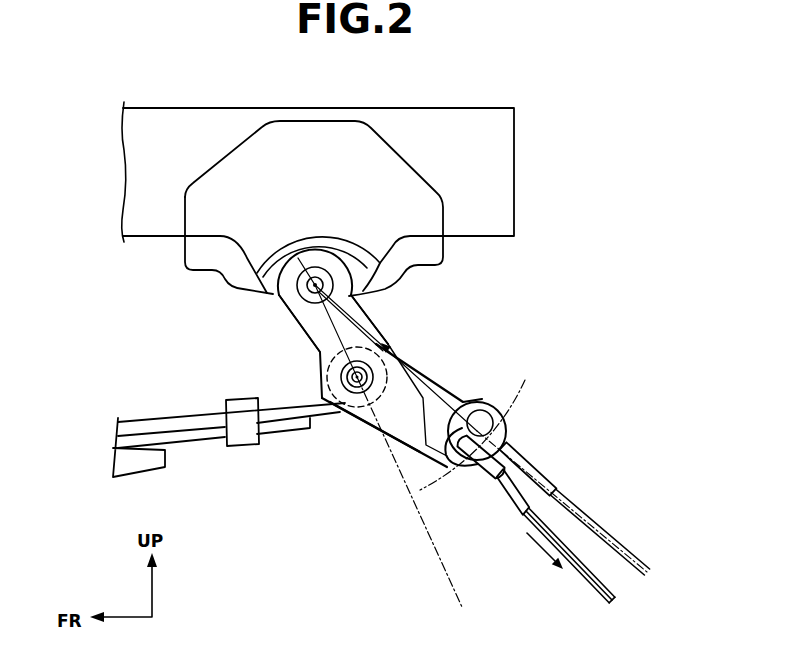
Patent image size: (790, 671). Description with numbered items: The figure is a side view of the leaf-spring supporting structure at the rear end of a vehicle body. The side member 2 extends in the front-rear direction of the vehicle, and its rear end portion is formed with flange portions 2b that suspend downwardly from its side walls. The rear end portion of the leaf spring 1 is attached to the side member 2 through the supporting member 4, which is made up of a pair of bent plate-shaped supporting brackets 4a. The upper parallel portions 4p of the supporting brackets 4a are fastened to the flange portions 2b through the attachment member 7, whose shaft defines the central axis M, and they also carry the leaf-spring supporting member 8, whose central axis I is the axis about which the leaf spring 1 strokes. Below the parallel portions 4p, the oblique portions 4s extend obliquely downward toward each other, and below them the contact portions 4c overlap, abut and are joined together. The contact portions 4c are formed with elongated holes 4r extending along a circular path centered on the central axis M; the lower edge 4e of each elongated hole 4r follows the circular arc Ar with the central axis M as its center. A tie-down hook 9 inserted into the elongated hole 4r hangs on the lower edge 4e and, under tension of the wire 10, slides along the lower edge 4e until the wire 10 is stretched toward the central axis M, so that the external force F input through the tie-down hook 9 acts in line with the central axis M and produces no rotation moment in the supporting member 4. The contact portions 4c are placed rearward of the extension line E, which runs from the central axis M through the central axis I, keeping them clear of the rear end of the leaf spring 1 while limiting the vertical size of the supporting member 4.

The leaf spring 1 is at (150, 414).
The side member 2 is at (448, 104).
The flange portions 2b is at (220, 212).
The supporting member 4 is at (425, 472).
The parallel portions 4p is at (357, 303).
The supporting brackets 4a is at (299, 323).
The oblique portions 4s is at (400, 433).
The elongated holes 4r is at (478, 408).
The contact portions 4c is at (490, 410).
The lower edge 4e is at (442, 458).
The attachment member 7 is at (275, 305).
The leaf-spring supporting member 8 is at (387, 345).
The tie-down hook 9 is at (525, 512).
The wire 10 is at (585, 578).
The central axis M is at (317, 283).
The central axis I is at (342, 380).
The circular arc Ar is at (520, 396).
The extension line E is at (443, 578).
The external force F is at (545, 557).